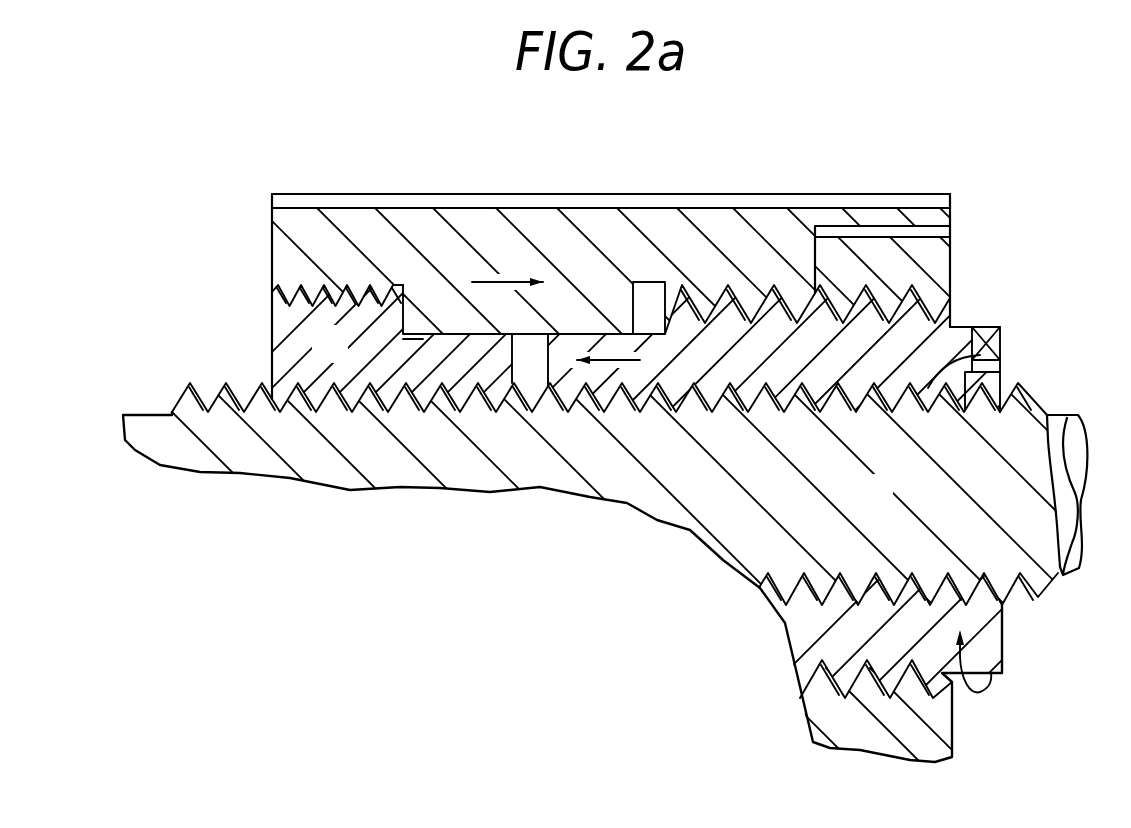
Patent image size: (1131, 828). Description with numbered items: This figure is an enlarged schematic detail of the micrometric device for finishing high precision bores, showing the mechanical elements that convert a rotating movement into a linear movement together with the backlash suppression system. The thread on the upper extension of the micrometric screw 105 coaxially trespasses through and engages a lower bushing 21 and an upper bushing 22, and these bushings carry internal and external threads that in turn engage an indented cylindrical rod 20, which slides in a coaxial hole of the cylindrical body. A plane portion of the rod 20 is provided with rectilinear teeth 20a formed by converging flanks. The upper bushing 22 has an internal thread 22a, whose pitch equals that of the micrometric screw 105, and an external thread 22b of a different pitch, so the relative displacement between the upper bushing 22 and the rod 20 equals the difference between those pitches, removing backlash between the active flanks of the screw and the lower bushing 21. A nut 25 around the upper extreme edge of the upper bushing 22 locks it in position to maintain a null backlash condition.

The indented cylindrical rod 20 is at (712, 215).
The rectilinear teeth 20a is at (540, 200).
The lower bushing 21 is at (342, 358).
The upper bushing 22 is at (930, 342).
The internal thread 22a is at (1000, 357).
The external thread 22b is at (907, 307).
The nut 25 is at (930, 247).
The micrometric screw 105 is at (887, 507).